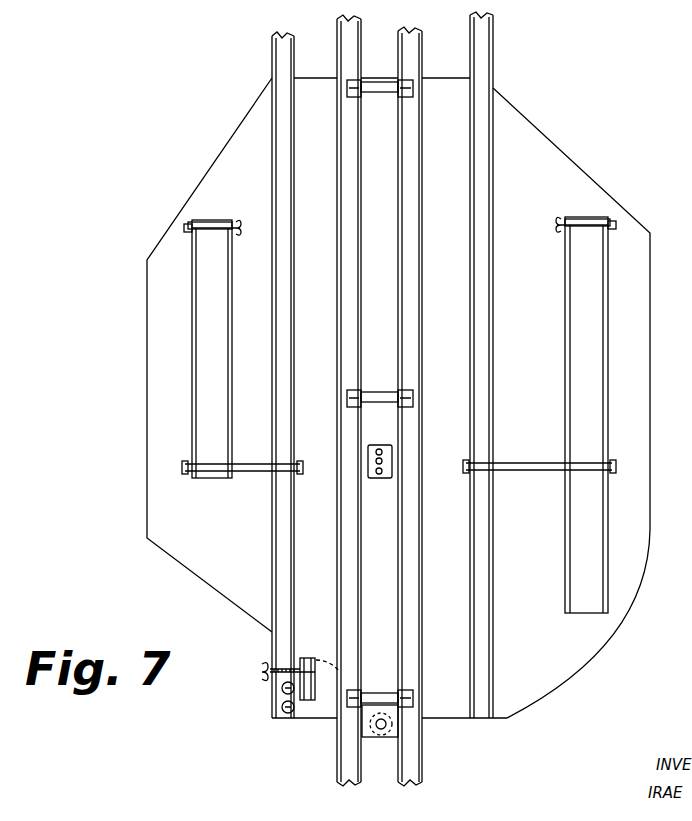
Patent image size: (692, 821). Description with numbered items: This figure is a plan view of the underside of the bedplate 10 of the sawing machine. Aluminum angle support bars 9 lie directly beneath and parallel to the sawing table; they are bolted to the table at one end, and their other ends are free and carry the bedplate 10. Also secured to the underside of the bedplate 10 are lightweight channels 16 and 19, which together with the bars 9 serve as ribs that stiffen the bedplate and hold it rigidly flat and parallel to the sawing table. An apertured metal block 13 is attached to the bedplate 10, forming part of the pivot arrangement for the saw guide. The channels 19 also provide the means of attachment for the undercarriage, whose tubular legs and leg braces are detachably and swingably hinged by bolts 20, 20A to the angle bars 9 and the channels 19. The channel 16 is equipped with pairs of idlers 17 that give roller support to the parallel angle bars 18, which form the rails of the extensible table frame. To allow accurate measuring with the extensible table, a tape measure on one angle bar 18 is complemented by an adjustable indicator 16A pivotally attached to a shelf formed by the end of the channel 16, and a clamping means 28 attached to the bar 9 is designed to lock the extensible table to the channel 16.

The angle support bar 9 is at (279, 622).
The bedplate 10 is at (540, 151).
The apertured metal block 13 is at (390, 478).
The channel 16 is at (375, 592).
The adjustable indicator 16A is at (384, 738).
The idlers 17 is at (346, 88).
The angle bar 18 is at (352, 572).
The channel 19 is at (210, 360).
The bolt 20 is at (262, 471).
The bolt 20A is at (211, 222).
The clamping means 28 is at (331, 700).